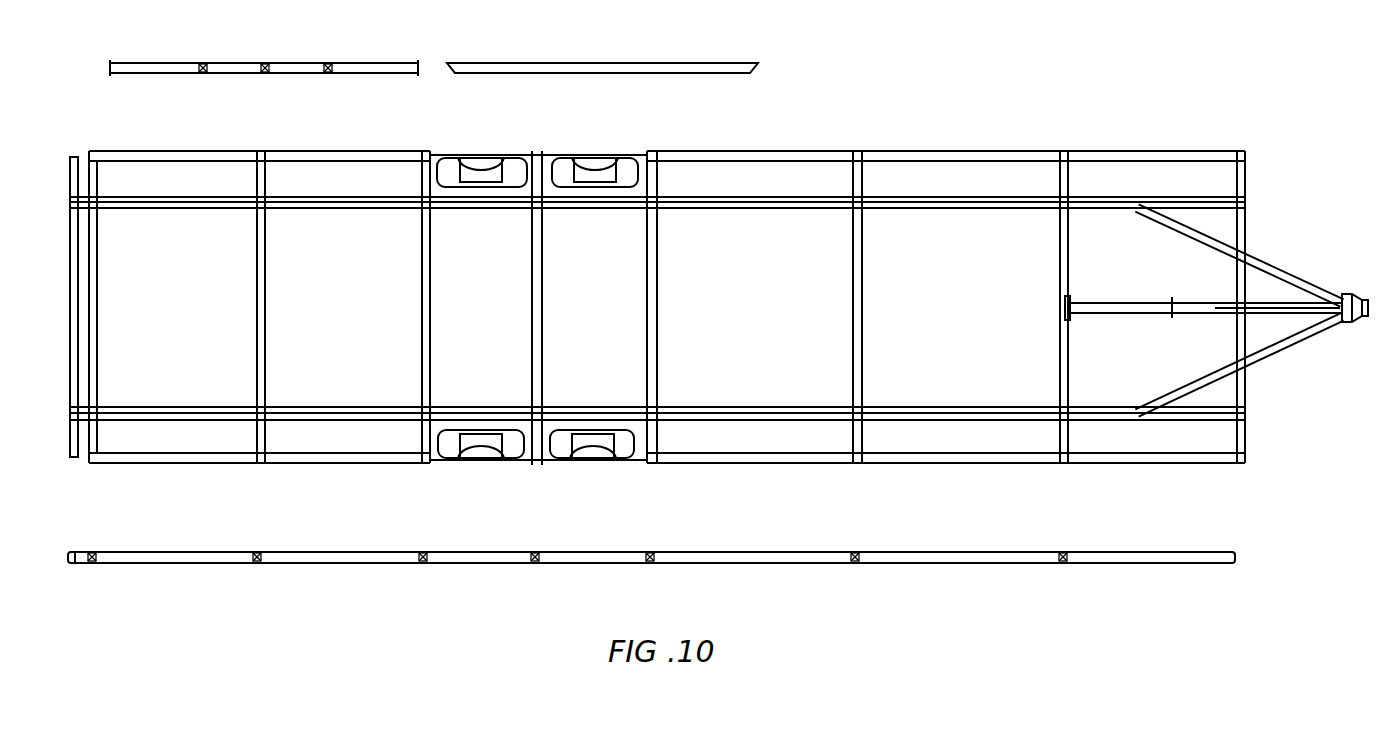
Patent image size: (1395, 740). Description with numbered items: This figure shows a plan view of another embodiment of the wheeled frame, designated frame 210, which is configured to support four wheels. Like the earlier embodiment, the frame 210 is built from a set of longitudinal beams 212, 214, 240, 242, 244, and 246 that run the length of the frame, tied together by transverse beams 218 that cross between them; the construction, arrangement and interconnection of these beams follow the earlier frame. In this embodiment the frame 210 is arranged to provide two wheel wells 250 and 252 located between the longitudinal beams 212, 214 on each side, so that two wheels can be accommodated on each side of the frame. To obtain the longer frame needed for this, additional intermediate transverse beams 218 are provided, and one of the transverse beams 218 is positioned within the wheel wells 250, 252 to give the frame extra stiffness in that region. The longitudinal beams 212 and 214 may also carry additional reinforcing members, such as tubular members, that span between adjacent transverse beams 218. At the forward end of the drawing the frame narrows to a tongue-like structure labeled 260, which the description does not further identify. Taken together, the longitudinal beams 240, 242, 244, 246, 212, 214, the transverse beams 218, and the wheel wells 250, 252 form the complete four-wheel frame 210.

The frame 210 is at (990, 92).
The longitudinal beam 212 is at (992, 192).
The longitudinal beam 214 is at (962, 420).
The transverse beams 218 is at (530, 283).
The longitudinal beam 240 is at (815, 155).
The longitudinal beam 242 is at (878, 463).
The longitudinal beam 244 is at (297, 153).
The longitudinal beam 246 is at (313, 463).
The wheel well 250 is at (605, 152).
The wheel well 252 is at (587, 468).
The tongue 260 is at (1283, 248).